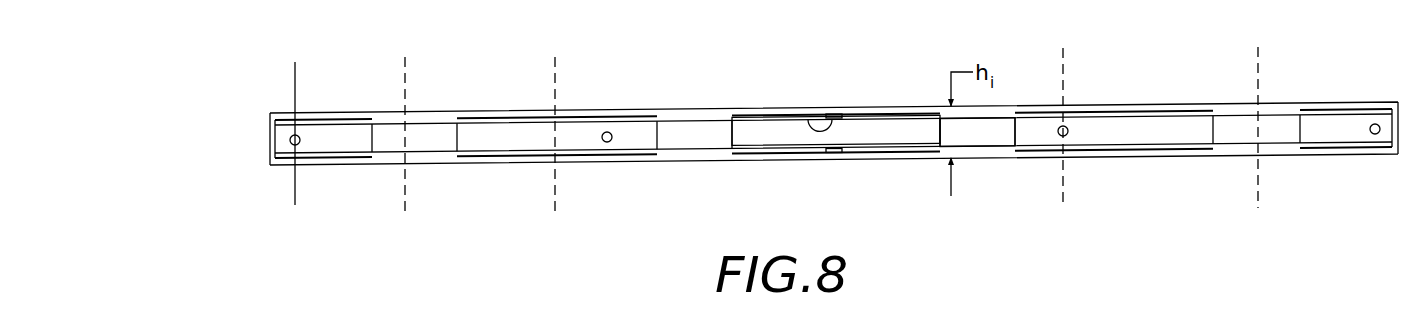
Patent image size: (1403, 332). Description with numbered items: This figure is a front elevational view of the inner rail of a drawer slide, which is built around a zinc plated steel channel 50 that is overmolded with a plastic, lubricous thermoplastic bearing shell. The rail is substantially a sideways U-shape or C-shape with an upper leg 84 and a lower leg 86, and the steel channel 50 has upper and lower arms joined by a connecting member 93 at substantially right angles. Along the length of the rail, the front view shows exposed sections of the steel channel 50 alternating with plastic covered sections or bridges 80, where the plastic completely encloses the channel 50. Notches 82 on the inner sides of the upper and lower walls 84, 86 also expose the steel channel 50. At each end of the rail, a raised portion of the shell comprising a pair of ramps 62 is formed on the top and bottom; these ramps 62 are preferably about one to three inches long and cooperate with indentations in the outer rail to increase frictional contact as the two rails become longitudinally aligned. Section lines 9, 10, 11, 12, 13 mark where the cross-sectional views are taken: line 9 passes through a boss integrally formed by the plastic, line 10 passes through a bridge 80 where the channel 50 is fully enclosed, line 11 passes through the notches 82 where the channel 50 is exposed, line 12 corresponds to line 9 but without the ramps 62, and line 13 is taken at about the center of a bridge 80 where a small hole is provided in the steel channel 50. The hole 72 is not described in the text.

The channel 50 is at (890, 128).
The ramps 62 is at (283, 113).
The intermediate hole 72 is at (613, 134).
The bridges 80 is at (980, 137).
The notches 82 is at (806, 117).
The upper leg 84 is at (1180, 107).
The lower leg 86 is at (1192, 150).
The connecting member 93 is at (758, 140).
The section line 9- 9 is at (295, 62).
The section line 10- 10 is at (405, 57).
The section line 11- 11 is at (555, 57).
The section line 12- 12 is at (1063, 48).
The section line 13- 13 is at (1258, 47).